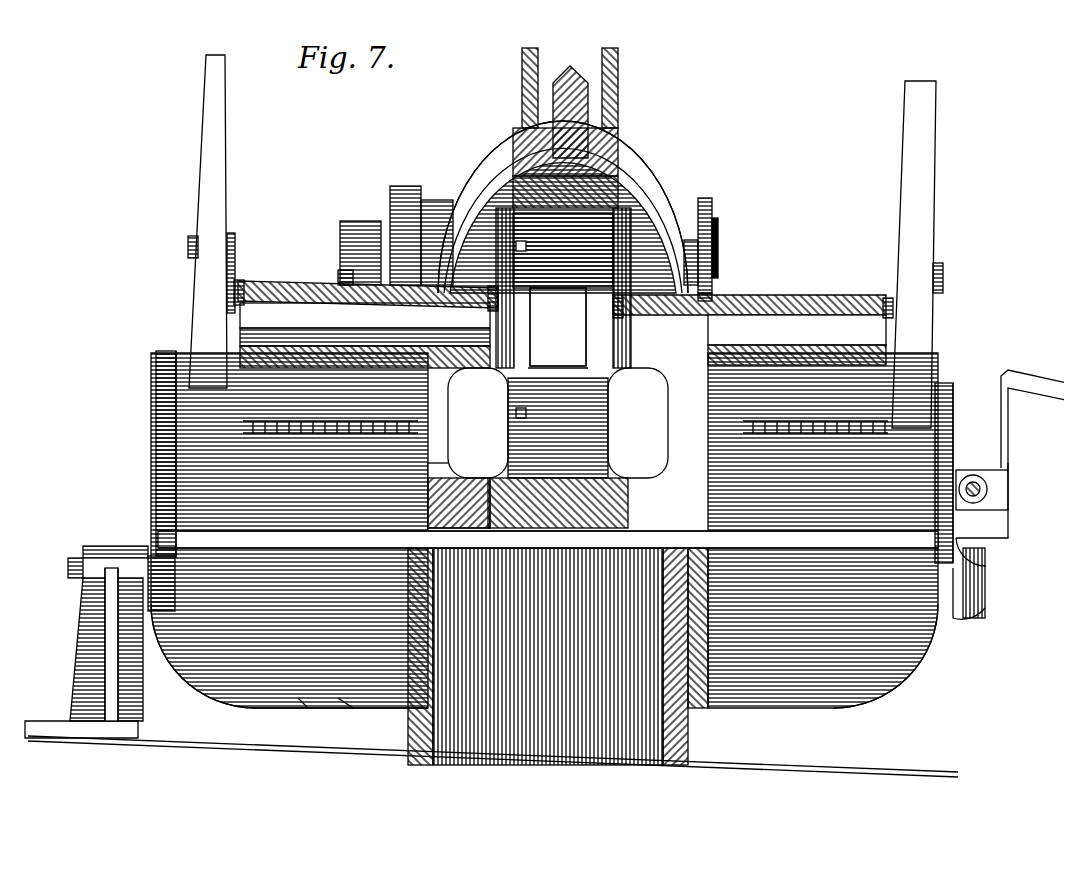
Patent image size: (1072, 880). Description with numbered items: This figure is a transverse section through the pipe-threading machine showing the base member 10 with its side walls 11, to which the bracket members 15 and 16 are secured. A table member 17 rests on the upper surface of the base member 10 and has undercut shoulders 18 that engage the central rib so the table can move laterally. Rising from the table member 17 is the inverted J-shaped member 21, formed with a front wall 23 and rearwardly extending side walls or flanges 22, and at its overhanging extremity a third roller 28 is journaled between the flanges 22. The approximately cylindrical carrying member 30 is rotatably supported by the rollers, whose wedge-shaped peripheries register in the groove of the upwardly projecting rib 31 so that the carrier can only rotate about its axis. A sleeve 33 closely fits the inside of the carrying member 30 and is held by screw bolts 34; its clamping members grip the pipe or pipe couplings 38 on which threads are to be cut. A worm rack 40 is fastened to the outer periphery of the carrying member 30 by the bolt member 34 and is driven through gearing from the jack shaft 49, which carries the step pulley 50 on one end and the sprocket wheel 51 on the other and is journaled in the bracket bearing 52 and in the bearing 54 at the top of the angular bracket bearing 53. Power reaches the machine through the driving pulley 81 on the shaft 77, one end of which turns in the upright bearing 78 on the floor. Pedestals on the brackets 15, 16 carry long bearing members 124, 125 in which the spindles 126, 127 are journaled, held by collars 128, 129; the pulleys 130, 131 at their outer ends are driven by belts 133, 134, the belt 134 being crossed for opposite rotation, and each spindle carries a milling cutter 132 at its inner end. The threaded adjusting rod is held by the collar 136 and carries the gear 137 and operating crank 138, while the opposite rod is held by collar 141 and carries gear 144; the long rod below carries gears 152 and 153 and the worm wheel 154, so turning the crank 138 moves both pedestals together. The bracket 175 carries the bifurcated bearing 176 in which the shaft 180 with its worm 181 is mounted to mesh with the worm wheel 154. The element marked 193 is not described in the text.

The base member 10 is at (548, 748).
The side walls 11 is at (372, 730).
The bracket member 15 is at (878, 648).
The bracket member 16 is at (265, 690).
The table member 17 is at (458, 470).
The undercut shoulders 18 is at (428, 465).
The inverted J-shaped member 21 is at (660, 195).
The side walls or flanges 22 is at (514, 45).
The front wall 23 is at (544, 249).
The third roller 28 is at (582, 90).
The carrying member 30 is at (640, 155).
The rib 31 is at (618, 128).
The sleeve 33 is at (655, 175).
The screw bolts 34 is at (506, 238).
The pipe or pipe couplings 38 is at (558, 327).
The worm rack 40 is at (482, 145).
The jack shaft 49 is at (705, 225).
The step pulley 50 is at (408, 178).
The sprocket wheel 51 is at (710, 247).
The bracket bearing 52 is at (684, 232).
The angular bracket bearing 53 is at (330, 273).
The bearing 54 is at (352, 213).
The shaft 77 is at (62, 580).
The upright bearing 78 is at (96, 538).
The driving pulley 81 is at (185, 705).
The bearing member 124 is at (770, 287).
The bearing member 125 is at (272, 272).
The spindle 126 is at (797, 340).
The spindle 127 is at (365, 336).
The collar 128 is at (612, 290).
The collar 129 is at (230, 272).
The driving pulley 130 is at (935, 265).
The driving pulley 131 is at (180, 250).
The milling cutter 132 is at (522, 330).
The belt 133 is at (912, 187).
The belt 134 is at (190, 178).
The collar 136 is at (946, 405).
The gear 137 is at (938, 375).
The operating crank 138 is at (1003, 422).
The collar 141 is at (150, 395).
The gear 144 is at (148, 352).
The gear 152 is at (145, 500).
The gear 153 is at (945, 430).
The worm wheel 154 is at (978, 580).
The bracket 175 is at (990, 540).
The bifurcated bearing 176 is at (1000, 500).
The shaft 180 is at (1002, 483).
The worm 181 is at (980, 470).
The stud 193 is at (728, 287).